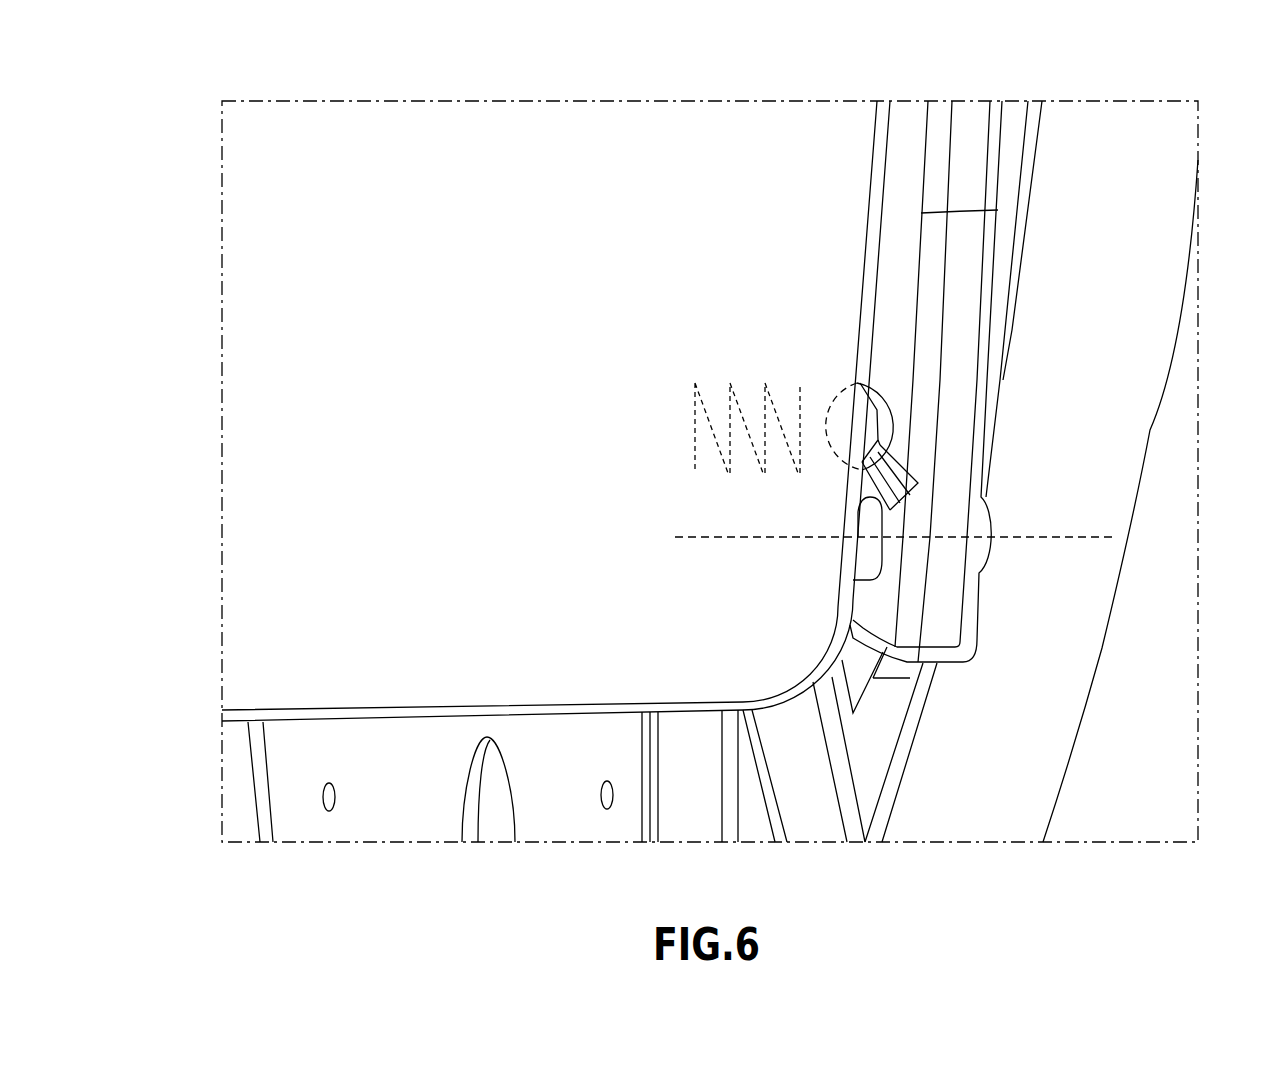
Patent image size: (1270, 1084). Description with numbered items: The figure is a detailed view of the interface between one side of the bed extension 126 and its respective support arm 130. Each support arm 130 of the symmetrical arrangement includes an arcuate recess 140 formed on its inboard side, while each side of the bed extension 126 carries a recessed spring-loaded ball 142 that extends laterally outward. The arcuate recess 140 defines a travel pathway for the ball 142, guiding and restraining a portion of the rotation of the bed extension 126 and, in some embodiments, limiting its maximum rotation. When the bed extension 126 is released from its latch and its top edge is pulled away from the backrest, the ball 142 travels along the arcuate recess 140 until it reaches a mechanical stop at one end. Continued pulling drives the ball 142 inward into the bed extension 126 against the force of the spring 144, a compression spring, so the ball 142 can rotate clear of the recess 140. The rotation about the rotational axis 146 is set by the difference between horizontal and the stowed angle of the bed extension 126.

The bed extension 126 is at (247, 294).
The support arm 130 is at (958, 333).
The arcuate recess 140 is at (897, 457).
The ball 142 is at (880, 563).
The spring 144 is at (741, 408).
The rotational axis 146 is at (1047, 537).